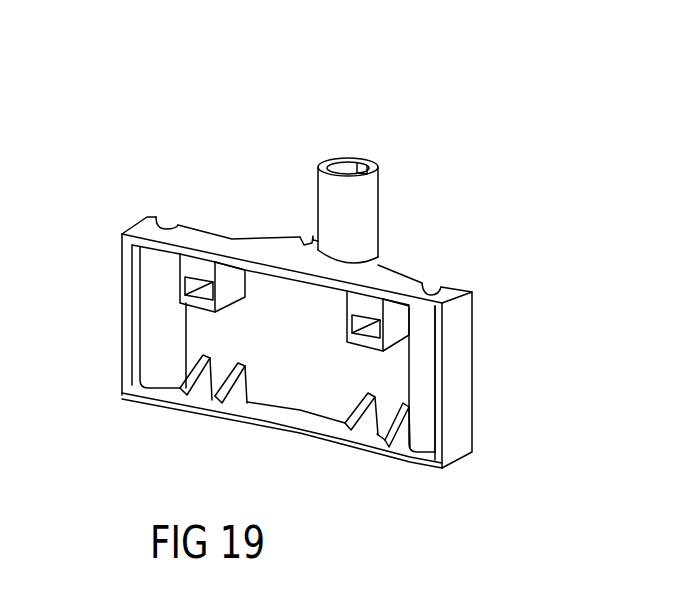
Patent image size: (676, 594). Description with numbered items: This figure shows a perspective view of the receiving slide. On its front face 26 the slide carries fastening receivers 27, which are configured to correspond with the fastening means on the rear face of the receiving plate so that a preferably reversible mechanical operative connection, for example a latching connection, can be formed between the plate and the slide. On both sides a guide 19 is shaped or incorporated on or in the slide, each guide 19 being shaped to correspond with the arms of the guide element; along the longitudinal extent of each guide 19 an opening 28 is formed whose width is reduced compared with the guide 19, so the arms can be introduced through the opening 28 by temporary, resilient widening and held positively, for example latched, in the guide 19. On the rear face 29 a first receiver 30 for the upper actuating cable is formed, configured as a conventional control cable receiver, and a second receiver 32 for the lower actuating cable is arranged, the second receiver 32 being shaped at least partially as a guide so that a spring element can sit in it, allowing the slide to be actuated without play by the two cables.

The guide 19 is at (157, 288).
The front face 26 is at (297, 394).
The fastening receiver 27 is at (203, 282).
The opening 28 is at (178, 227).
The rear face 29 is at (383, 265).
The first receiver 30 is at (305, 232).
The second receiver 32 is at (364, 165).